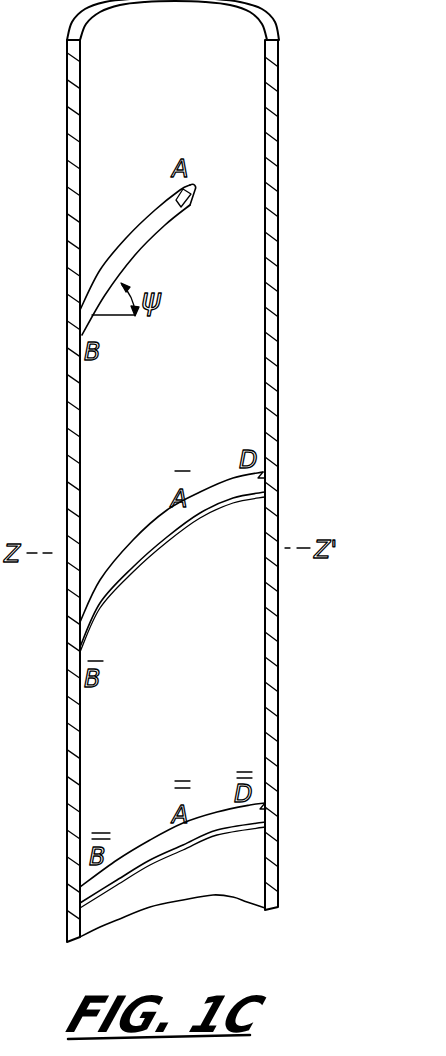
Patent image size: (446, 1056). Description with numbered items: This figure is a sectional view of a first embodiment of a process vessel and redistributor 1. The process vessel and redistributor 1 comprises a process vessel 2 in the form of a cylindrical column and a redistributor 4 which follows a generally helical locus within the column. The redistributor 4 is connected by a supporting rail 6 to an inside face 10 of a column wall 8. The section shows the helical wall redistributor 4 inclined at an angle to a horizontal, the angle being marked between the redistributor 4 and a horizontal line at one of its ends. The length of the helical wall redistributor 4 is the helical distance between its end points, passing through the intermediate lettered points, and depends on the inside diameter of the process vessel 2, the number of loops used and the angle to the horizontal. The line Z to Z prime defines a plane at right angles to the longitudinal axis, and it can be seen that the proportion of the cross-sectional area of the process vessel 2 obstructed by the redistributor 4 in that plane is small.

The process vessel and redistributor 1 is at (206, 482).
The process vessel 2 is at (279, 173).
The redistributor 4 is at (93, 282).
The supporting rail 6 is at (197, 191).
The column wall 8 is at (265, 318).
The inside face 10 is at (248, 292).